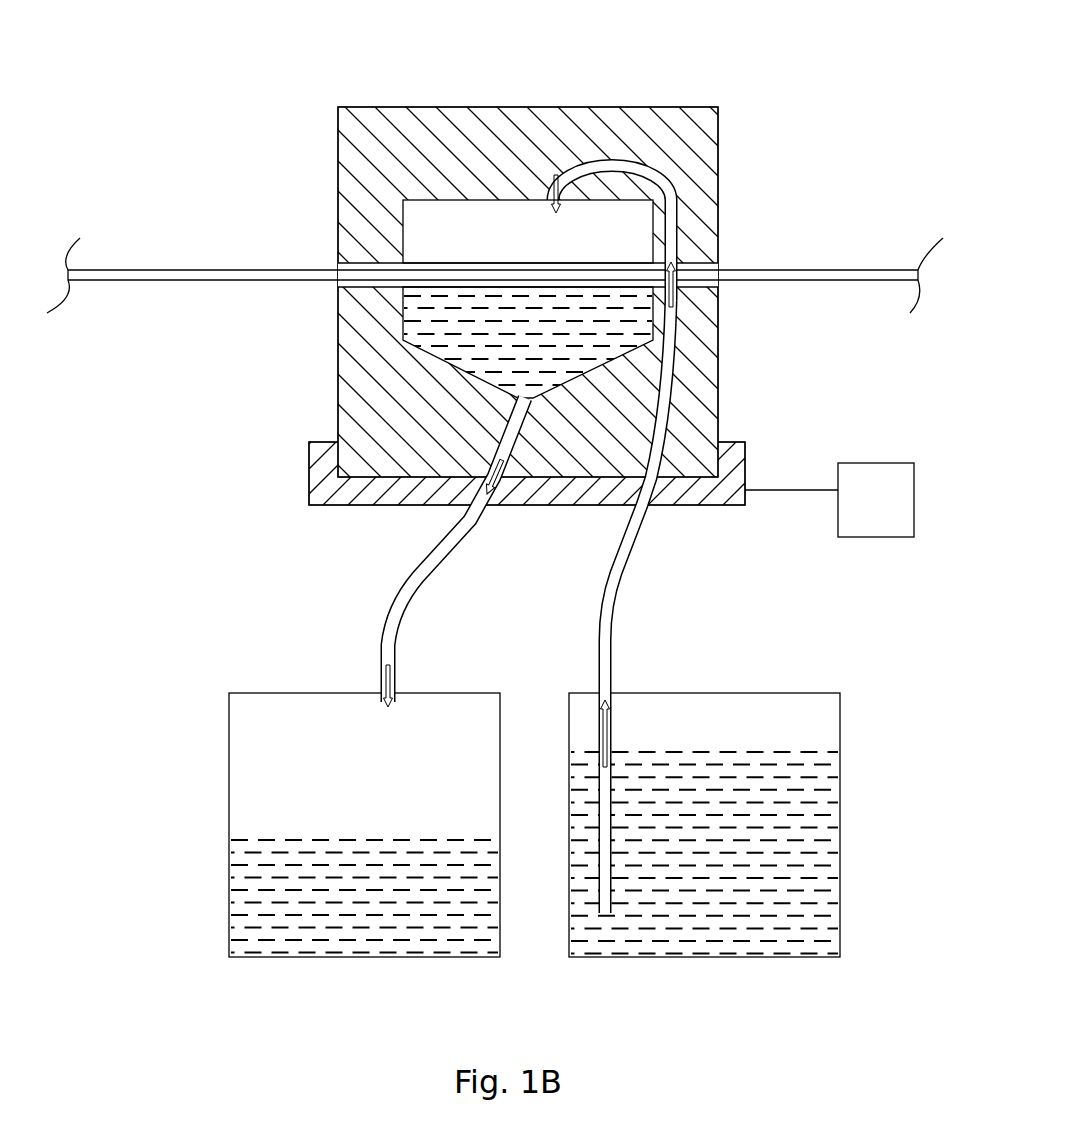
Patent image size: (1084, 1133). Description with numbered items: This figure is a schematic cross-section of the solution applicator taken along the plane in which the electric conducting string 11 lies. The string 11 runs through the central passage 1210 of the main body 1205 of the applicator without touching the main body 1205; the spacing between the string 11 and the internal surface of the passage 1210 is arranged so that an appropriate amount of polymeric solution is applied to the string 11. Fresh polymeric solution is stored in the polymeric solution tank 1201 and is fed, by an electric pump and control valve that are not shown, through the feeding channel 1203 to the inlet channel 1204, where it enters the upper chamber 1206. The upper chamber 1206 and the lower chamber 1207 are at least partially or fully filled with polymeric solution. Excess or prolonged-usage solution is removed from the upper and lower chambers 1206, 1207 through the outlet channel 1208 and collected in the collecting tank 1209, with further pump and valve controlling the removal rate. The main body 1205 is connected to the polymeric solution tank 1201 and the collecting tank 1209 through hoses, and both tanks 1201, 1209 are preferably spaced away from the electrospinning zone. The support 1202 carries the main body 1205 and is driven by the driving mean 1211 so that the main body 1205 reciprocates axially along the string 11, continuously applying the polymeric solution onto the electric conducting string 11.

The electric conducting string 11 is at (783, 275).
The polymeric solution tank 1201 is at (840, 860).
The support 1202 is at (308, 445).
The feeding channel 1203 is at (615, 587).
The inlet channel 1204 is at (606, 167).
The main body 1205 is at (700, 150).
The upper chamber 1206 is at (432, 215).
The lower chamber 1207 is at (428, 322).
The outlet channel 1208 is at (420, 566).
The collecting tank 1209 is at (229, 762).
The central passage 1210 is at (338, 264).
The driving mean 1211 is at (883, 538).